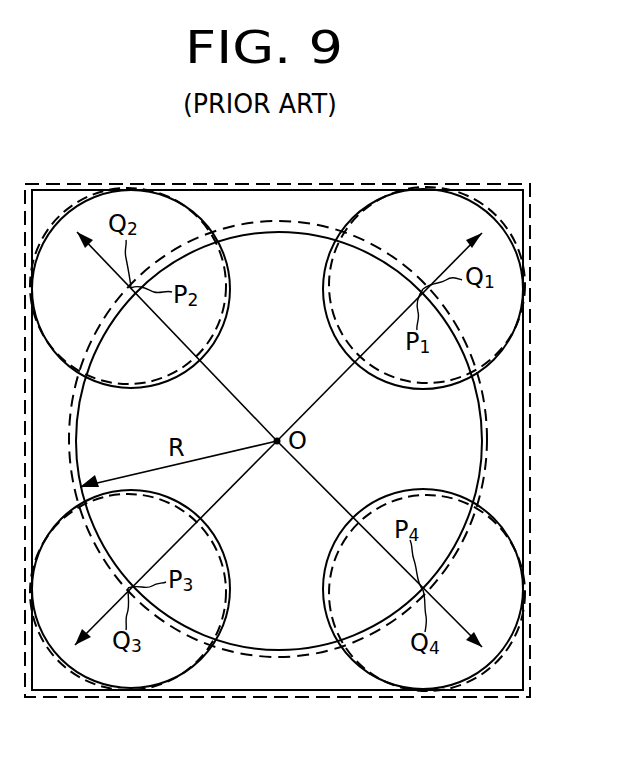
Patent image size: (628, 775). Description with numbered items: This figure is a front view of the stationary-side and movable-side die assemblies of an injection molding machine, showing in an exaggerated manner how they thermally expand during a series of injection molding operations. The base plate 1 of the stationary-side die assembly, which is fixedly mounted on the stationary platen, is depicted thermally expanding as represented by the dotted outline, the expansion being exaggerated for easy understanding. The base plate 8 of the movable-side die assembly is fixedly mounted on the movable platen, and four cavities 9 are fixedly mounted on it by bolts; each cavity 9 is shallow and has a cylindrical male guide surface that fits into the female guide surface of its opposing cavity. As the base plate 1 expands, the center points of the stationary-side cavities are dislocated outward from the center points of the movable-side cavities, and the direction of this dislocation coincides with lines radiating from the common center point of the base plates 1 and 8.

The base plate 1 is at (528, 517).
The base plate 8 is at (524, 385).
The cavity 9 is at (460, 663).